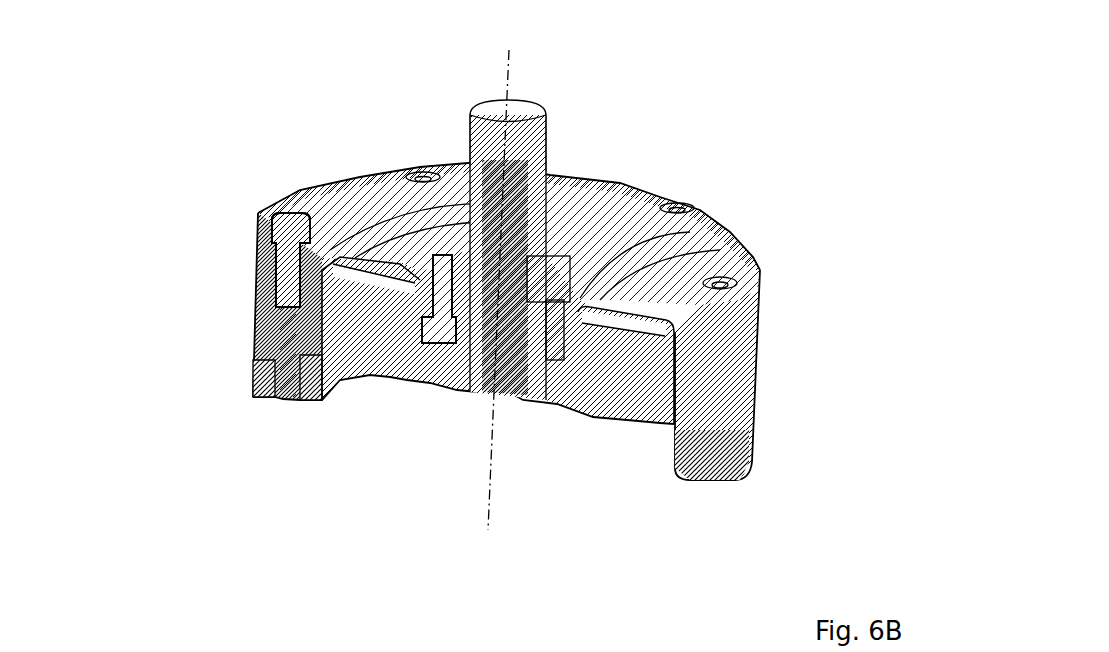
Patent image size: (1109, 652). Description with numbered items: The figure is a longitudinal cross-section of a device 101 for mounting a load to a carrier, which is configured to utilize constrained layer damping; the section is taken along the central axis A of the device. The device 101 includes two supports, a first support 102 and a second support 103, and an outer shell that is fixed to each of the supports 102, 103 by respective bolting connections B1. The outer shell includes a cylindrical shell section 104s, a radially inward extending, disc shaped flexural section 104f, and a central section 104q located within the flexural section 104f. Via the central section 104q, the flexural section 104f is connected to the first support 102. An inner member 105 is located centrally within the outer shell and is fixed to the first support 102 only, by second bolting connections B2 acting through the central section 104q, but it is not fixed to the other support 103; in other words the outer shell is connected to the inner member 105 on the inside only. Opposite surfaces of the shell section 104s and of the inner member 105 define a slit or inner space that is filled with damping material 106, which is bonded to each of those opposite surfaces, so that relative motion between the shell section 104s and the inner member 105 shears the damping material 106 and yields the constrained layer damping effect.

The device 101 is at (215, 192).
The first support 102 is at (258, 238).
The second support 103 is at (255, 372).
The shell section 104s is at (258, 290).
The central section 104q is at (549, 244).
The flexural section 104f is at (642, 272).
The inner member 105 is at (647, 363).
The damping material 106 is at (318, 354).
The bolting connections B1 is at (292, 205).
The second bolting connections B2 is at (437, 252).
The central axis A is at (497, 290).